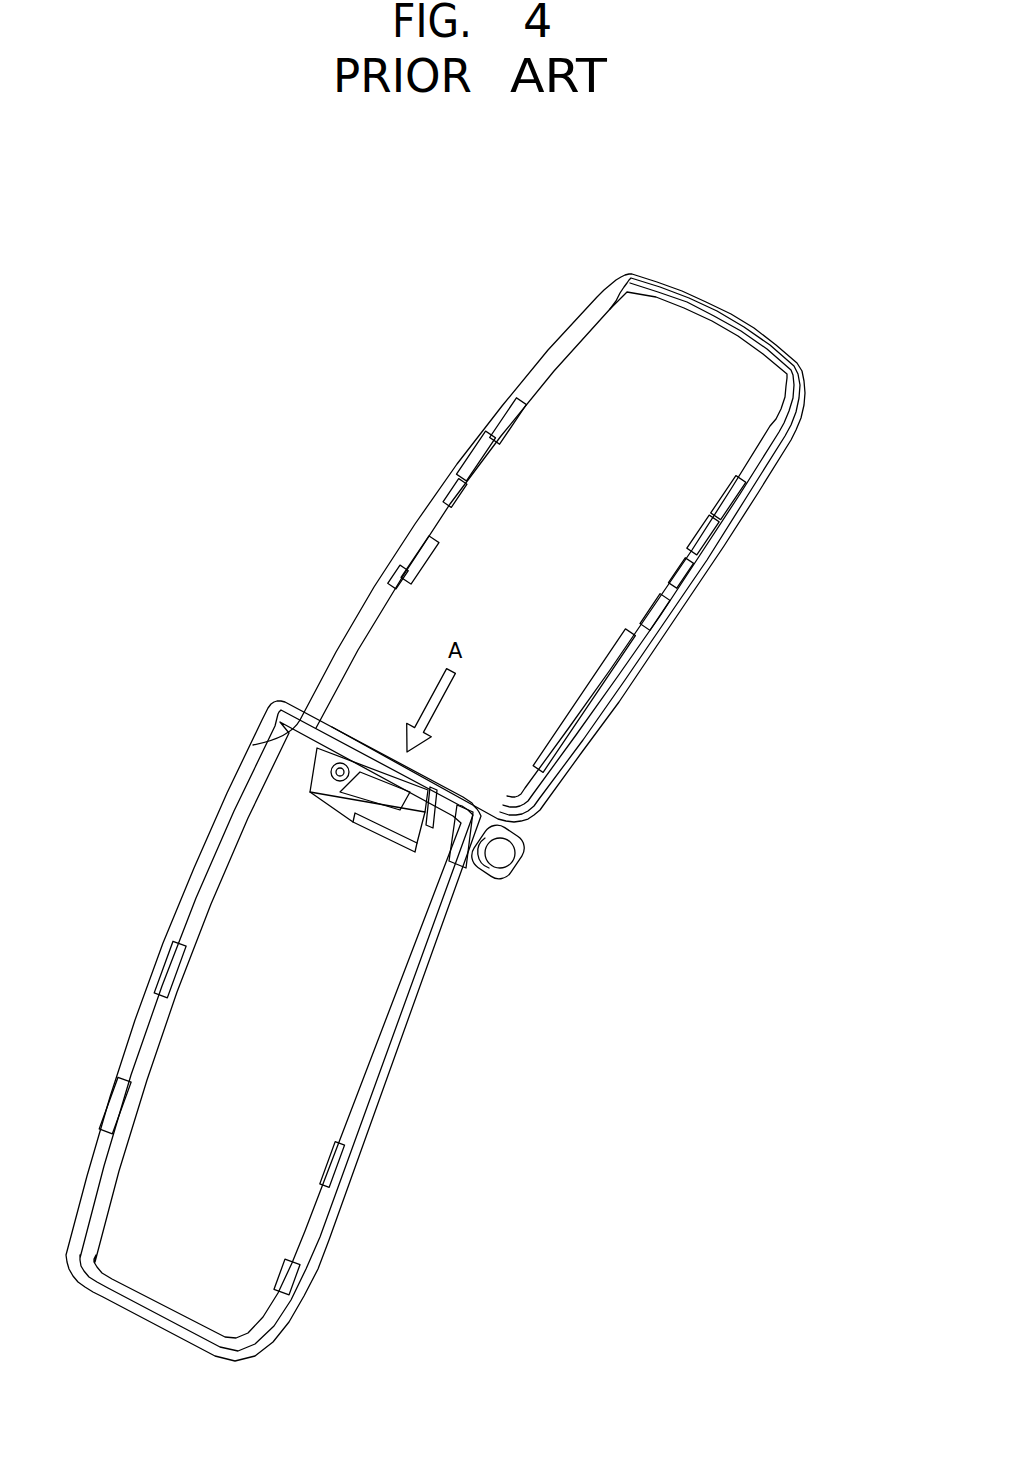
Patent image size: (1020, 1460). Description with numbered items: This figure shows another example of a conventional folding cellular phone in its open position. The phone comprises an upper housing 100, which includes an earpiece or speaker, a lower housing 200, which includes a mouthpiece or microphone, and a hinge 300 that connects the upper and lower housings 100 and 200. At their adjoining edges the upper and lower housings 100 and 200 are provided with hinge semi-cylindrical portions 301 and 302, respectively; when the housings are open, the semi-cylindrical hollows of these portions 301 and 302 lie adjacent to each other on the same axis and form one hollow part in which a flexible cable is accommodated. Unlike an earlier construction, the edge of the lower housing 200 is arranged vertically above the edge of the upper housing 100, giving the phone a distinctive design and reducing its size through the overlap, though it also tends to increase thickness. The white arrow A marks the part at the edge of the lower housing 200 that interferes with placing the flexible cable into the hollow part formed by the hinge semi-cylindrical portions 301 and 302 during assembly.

The upper housing 100 is at (730, 432).
The lower housing 200 is at (258, 1273).
The hinge 300 is at (495, 860).
The hinge semi-cylindrical portion 301 is at (456, 855).
The hinge semi-cylindrical portion 302 is at (360, 797).